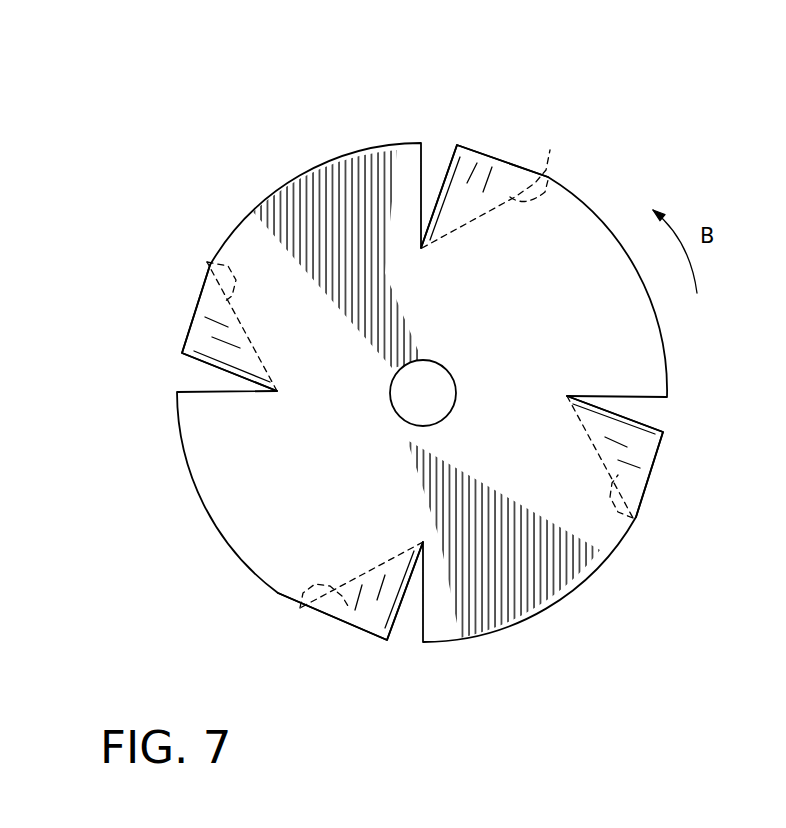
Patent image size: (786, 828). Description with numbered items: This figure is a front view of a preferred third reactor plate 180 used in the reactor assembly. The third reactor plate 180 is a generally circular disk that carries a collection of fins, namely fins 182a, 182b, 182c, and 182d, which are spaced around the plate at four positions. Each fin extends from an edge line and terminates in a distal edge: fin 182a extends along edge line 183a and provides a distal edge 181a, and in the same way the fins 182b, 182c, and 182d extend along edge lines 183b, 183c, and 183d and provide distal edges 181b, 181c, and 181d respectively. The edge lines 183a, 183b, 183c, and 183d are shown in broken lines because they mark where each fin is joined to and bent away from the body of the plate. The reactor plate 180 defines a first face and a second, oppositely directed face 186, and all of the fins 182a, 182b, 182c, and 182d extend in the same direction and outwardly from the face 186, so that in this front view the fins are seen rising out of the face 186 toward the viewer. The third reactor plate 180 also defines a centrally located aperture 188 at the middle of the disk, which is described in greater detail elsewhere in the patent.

The third reactor plate 180 is at (262, 95).
The distal edge 181a is at (446, 178).
The distal edge 181b is at (640, 414).
The distal edge 181c is at (400, 612).
The distal edge 181d is at (210, 369).
The fin 182a is at (466, 172).
The fin 182b is at (658, 440).
The fin 182c is at (376, 600).
The fin 182d is at (220, 343).
The edge line 183a is at (550, 150).
The edge line 183b is at (633, 518).
The edge line 183c is at (300, 608).
The edge line 183d is at (207, 262).
The second face 186 is at (532, 323).
The aperture 188 is at (455, 406).